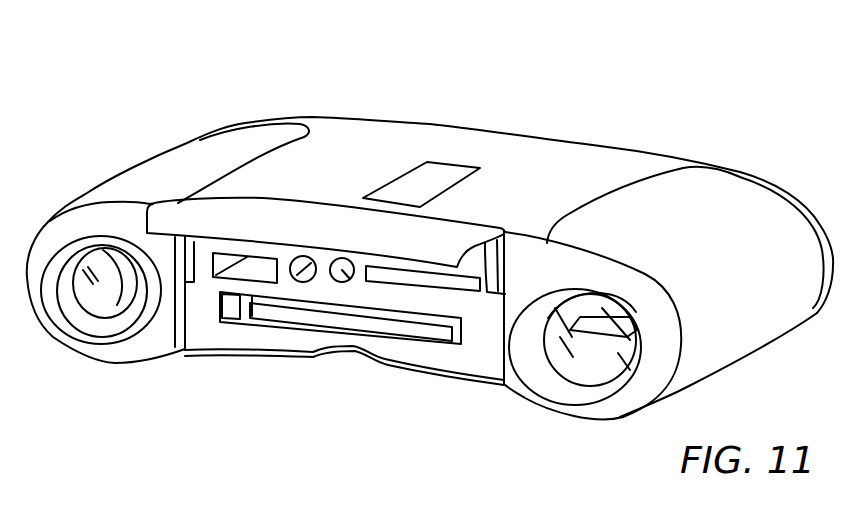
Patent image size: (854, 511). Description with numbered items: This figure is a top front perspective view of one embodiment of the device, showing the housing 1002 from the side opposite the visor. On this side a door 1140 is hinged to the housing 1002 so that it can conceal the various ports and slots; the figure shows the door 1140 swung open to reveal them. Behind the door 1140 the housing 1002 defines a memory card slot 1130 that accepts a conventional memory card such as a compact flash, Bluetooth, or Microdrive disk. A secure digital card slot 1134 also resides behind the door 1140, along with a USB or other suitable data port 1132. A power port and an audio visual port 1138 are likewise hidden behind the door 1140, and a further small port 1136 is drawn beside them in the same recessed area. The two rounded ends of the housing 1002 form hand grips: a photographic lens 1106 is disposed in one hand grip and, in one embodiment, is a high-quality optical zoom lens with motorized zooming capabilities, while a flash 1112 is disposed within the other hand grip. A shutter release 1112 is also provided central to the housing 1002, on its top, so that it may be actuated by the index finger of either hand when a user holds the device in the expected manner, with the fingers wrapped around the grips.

The housing 1002 is at (503, 150).
The photographic lens 1106 is at (102, 292).
The flash / shutter release 1112 is at (437, 175).
The memory card slot 1130 is at (378, 325).
The data port 1132 is at (218, 258).
The secure digital card slot 1134 is at (476, 283).
The button 1136 is at (297, 276).
The audio visual port 1138 is at (337, 277).
The door 1140 is at (250, 217).